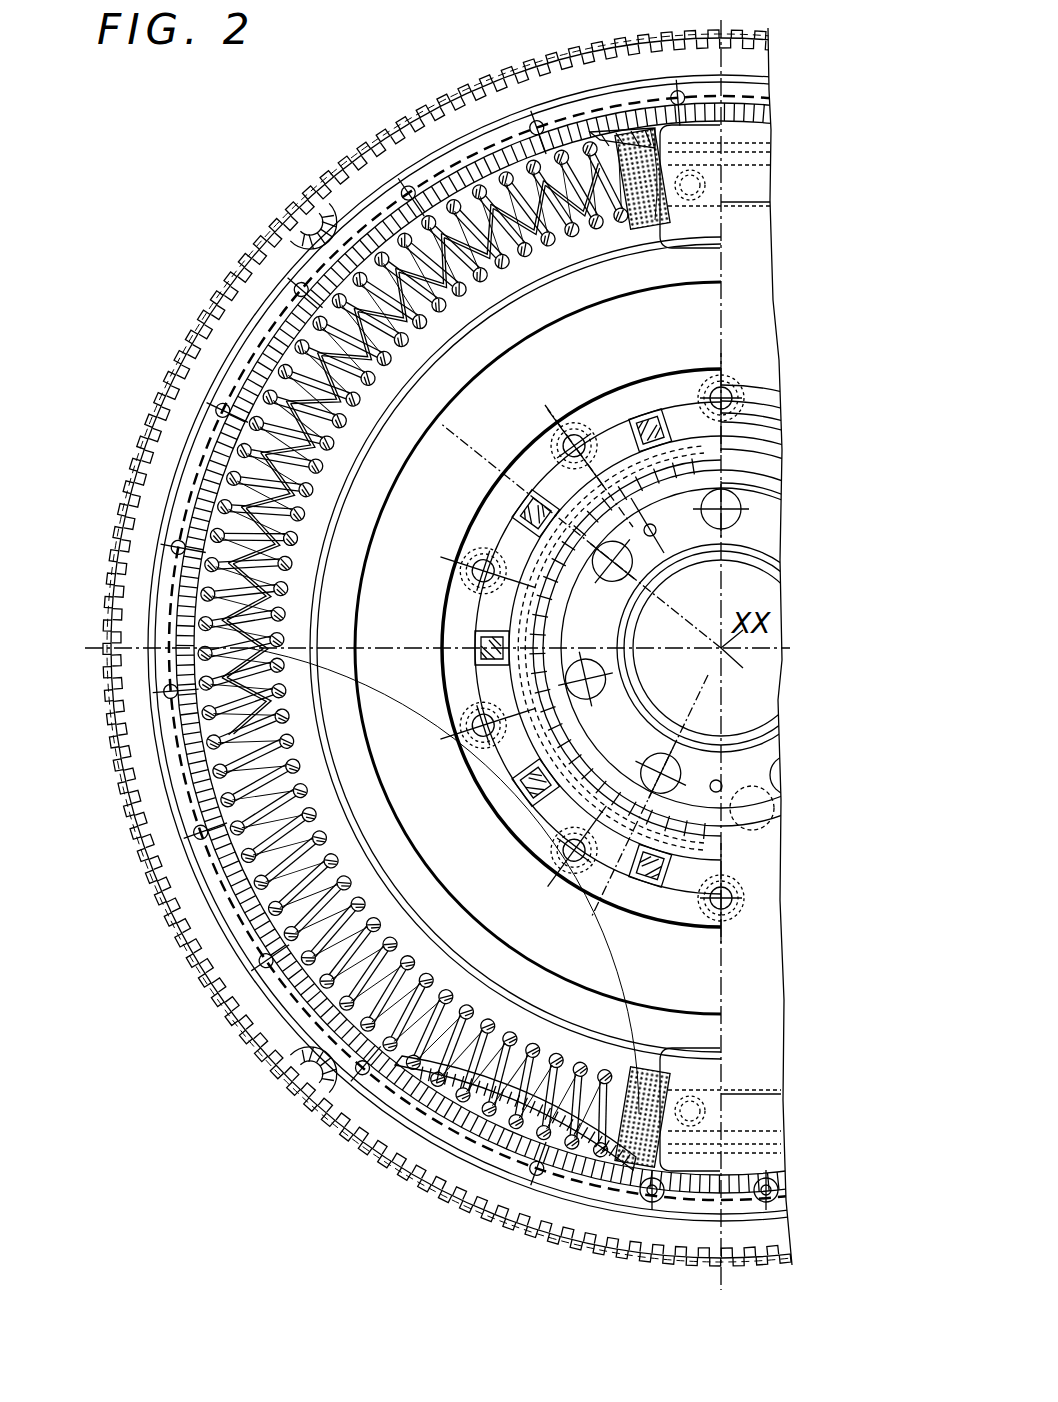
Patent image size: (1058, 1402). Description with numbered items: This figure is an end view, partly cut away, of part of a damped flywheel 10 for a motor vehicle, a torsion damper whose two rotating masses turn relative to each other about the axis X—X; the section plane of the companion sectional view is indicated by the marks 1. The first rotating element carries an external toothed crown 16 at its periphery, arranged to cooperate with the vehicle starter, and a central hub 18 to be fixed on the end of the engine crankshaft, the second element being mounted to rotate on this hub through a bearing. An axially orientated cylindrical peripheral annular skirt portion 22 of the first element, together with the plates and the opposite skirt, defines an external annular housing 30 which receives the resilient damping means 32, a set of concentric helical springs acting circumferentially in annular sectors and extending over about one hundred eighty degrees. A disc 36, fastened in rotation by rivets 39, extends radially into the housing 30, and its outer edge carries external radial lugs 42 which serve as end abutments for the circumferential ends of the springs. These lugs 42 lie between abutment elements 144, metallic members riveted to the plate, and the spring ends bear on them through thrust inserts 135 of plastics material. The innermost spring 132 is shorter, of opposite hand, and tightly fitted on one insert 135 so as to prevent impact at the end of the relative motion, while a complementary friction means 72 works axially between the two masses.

The damped flywheel 10 is at (54, 475).
The section line 1 is at (513, 704).
The external toothed crown 16 is at (580, 648).
The cylindrical peripheral annular skirt portion 22 is at (555, 648).
The innermost spring 132 is at (605, 644).
The external annular housing 30 is at (418, 646).
The disc 36 is at (475, 648).
The resilient damping means 32 is at (640, 648).
The thrust inserts 135 is at (617, 645).
The abutment elements 144 is at (628, 110).
The external radial lugs 42 is at (720, 585).
The rivets 39 is at (626, 640).
The central hub 18 is at (669, 670).
The complementary friction means 72 is at (611, 648).